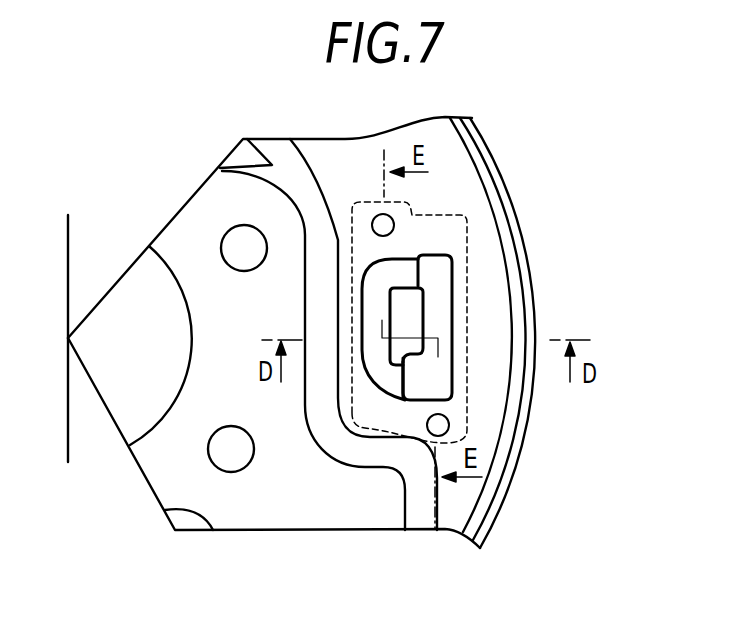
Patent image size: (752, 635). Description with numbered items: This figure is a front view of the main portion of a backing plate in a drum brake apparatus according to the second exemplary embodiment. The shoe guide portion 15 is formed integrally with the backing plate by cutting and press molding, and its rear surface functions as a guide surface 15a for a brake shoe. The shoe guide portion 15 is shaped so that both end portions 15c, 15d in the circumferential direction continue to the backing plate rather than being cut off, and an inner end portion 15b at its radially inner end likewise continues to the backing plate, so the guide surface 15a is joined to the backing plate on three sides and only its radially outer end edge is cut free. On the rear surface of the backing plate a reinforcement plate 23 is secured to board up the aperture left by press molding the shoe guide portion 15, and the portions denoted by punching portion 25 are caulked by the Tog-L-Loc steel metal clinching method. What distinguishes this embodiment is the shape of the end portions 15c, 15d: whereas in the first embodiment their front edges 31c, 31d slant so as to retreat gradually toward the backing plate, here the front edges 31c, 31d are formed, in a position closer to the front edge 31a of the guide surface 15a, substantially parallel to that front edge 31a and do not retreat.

The shoe guide portion 15 is at (400, 352).
The guide surface 15a is at (412, 307).
The inner end portion 15b is at (380, 313).
The end portion 15c is at (403, 273).
The end portion 15d is at (397, 378).
The reinforcement plate 23 is at (467, 400).
The punching portion 25 is at (394, 218).
The front edge of guide surface 31a is at (424, 323).
The front edge 31c is at (417, 275).
The front edge 31d is at (405, 380).